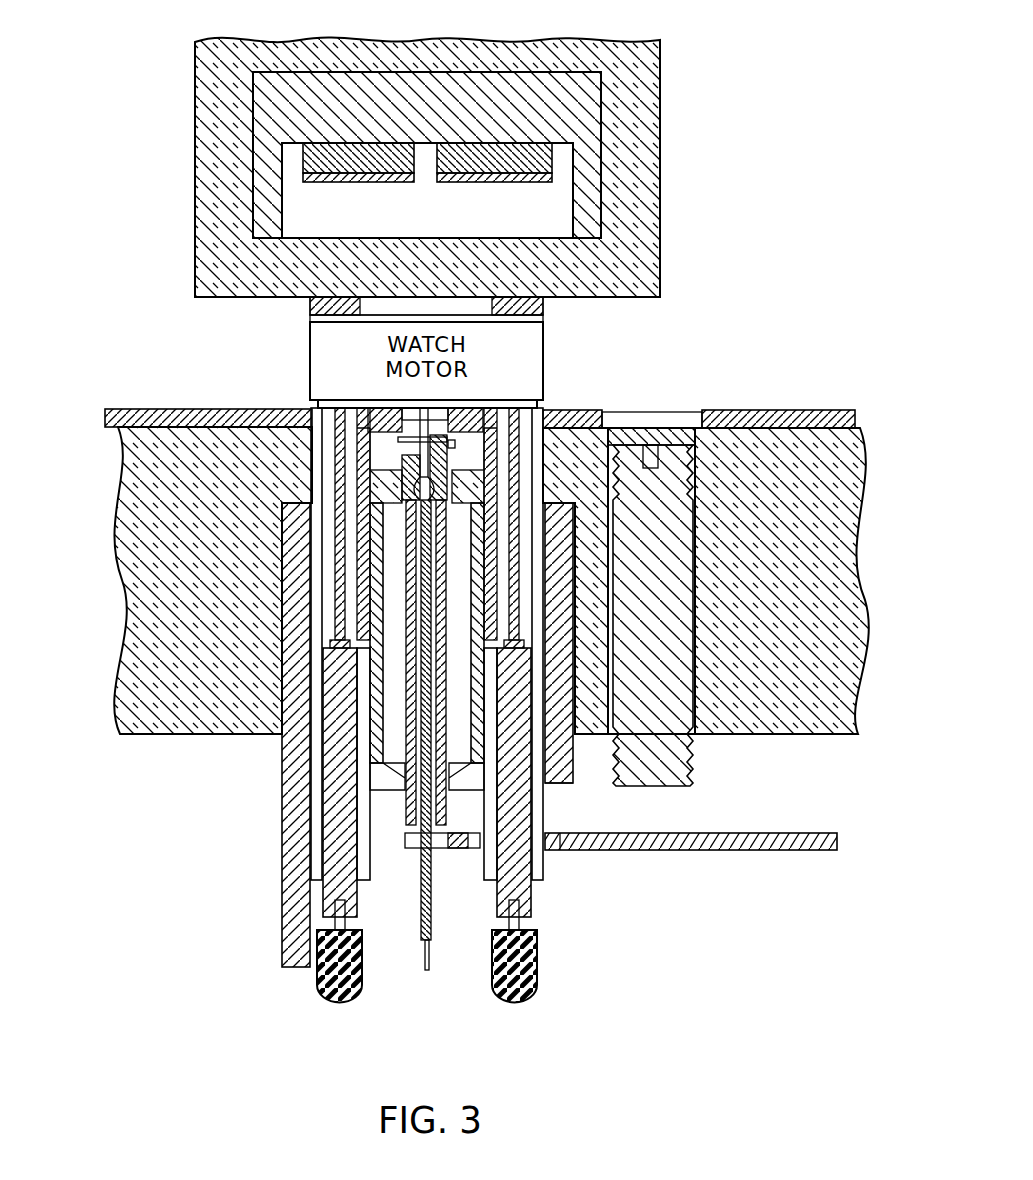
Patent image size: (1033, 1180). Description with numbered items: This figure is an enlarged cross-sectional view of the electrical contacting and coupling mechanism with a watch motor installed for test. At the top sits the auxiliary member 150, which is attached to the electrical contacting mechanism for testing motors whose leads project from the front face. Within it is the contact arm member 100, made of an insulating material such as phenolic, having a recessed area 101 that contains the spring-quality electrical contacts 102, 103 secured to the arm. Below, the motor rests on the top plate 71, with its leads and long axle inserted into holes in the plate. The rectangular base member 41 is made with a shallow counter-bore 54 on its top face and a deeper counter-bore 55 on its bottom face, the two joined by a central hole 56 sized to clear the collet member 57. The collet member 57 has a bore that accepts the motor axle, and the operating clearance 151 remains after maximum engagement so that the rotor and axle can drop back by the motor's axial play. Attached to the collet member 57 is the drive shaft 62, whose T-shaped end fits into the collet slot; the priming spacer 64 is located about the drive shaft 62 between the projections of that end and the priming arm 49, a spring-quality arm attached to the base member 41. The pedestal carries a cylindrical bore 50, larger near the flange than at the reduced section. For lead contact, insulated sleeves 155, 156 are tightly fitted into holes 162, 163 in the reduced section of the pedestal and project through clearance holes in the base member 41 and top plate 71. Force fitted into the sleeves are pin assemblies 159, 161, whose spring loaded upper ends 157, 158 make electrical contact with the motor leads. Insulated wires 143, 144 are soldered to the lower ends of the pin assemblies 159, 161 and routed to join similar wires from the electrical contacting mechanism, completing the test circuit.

The auxiliary member 150 is at (195, 113).
The contact arm member 100 is at (605, 95).
The recessed area 101 is at (445, 222).
The electrical contact 102 is at (530, 186).
The electrical contact 103 is at (386, 185).
The collet member 57 is at (452, 438).
The shallow counter-bore 54 is at (455, 446).
The central hole 56 is at (455, 470).
The top plate 71 is at (170, 408).
The operating clearance 151 is at (400, 440).
The base member 41 is at (122, 525).
The deeper counter-bore 55 is at (558, 505).
The spring loaded upper end 157 is at (575, 632).
The spring loaded upper end 158 is at (325, 650).
The insulated sleeve 156 is at (312, 823).
The hole 162 is at (547, 790).
The priming spacer 64 is at (445, 816).
The insulated sleeve 155 is at (545, 830).
The priming arm 49 is at (665, 852).
The hole 163 is at (316, 882).
The pin assembly 161 is at (360, 898).
The drive shaft 62 is at (438, 906).
The pin assembly 159 is at (537, 906).
The cylindrical bore 50 is at (427, 953).
The insulated wire 144 is at (362, 1000).
The insulated wire 143 is at (535, 1000).